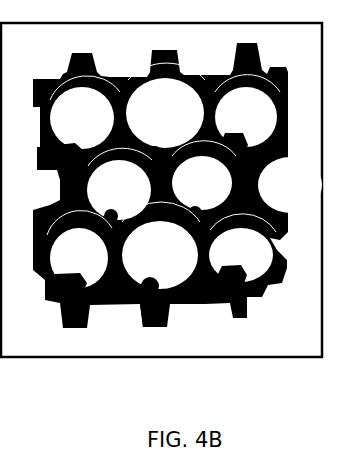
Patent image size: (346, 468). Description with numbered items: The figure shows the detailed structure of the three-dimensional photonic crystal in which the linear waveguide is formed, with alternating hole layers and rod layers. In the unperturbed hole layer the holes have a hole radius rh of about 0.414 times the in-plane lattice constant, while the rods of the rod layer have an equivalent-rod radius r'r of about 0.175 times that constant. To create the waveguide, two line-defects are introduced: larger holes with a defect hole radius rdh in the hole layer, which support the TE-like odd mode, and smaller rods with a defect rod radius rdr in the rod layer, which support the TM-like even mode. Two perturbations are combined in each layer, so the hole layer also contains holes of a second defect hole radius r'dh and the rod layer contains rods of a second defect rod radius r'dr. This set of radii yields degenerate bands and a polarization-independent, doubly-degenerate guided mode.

The hole radius rh is at (78, 118).
The defect hole radius rdh is at (165, 117).
The equivalent-rod radius r'r is at (46, 144).
The second defect rod radius r'dr is at (111, 184).
The second defect hole radius r'dh is at (204, 188).
The defect rod radius rdr is at (140, 302).